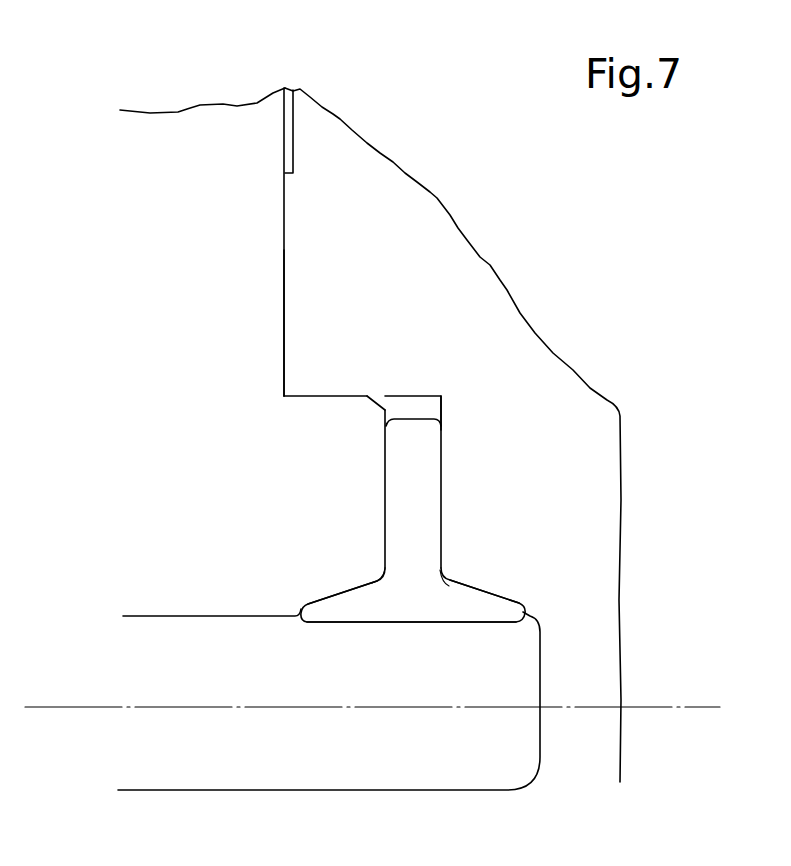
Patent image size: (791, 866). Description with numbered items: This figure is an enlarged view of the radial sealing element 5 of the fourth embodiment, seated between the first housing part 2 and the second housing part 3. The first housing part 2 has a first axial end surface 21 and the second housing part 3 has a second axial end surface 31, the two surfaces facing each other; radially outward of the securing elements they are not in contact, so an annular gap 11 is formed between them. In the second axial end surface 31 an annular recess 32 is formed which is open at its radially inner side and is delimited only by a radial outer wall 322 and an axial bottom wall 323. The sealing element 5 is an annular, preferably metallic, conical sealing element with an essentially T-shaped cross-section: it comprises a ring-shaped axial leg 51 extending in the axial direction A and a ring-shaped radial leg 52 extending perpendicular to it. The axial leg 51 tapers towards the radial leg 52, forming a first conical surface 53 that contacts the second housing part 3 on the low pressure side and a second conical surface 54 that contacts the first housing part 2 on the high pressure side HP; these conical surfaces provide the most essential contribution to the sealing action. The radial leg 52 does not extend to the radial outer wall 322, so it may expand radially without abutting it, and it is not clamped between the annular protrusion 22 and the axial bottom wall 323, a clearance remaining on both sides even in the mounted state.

The first housing part 2 is at (178, 112).
The annular gap 11 is at (288, 88).
The second housing part 3 is at (372, 165).
The first axial end surface 21 is at (302, 218).
The second axial end surface 31 is at (265, 294).
The annular protrusion 22 is at (337, 397).
The radial outer wall 322 is at (398, 397).
The annular recess 32 is at (445, 398).
The axial bottom wall 323 is at (456, 411).
The radial leg 52 is at (423, 485).
The radial sealing element 5 is at (443, 627).
The second conical surface 54 is at (326, 580).
The first conical surface 53 is at (488, 575).
The axial leg 51 is at (493, 613).
The high pressure side HP is at (255, 682).
The axial direction A is at (82, 707).